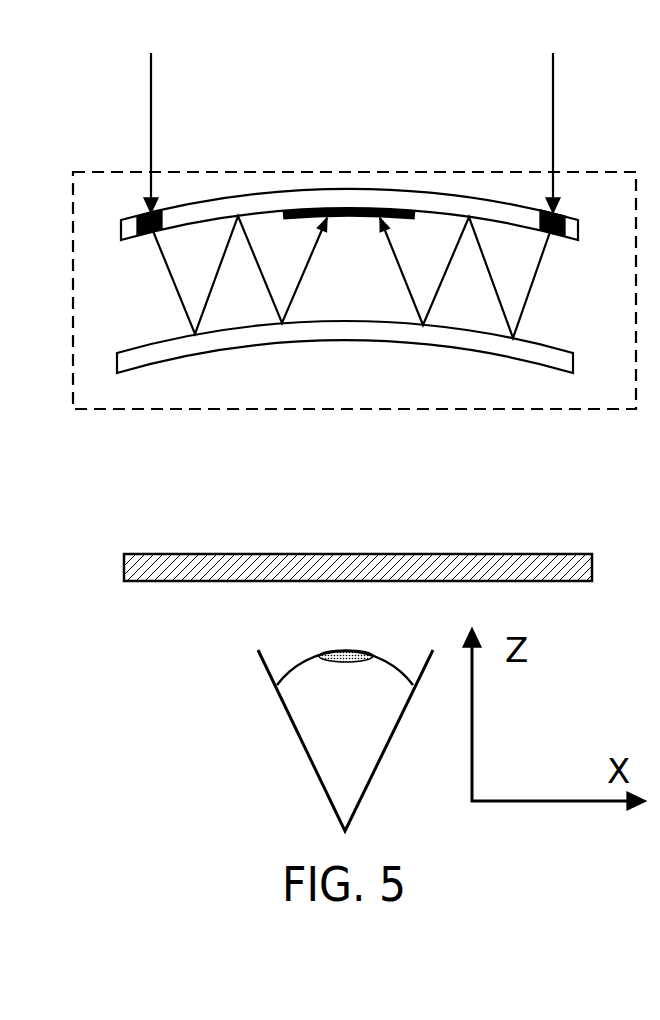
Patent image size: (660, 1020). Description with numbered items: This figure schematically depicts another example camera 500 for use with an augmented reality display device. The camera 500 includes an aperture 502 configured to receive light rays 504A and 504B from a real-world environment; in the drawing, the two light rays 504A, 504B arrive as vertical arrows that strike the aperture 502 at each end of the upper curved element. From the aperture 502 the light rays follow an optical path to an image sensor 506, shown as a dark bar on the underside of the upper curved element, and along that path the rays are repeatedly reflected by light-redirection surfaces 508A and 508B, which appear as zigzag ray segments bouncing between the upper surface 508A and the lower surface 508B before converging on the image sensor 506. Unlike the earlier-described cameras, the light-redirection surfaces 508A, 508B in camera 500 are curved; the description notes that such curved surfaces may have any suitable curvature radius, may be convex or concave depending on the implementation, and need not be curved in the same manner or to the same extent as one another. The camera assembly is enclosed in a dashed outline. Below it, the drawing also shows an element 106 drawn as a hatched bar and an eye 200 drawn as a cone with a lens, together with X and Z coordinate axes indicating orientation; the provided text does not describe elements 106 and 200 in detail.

The camera 500 is at (97, 171).
The aperture 502 is at (145, 213).
The light ray 504A is at (151, 120).
The light ray 504B is at (553, 112).
The image sensor 506 is at (342, 208).
The light-redirection surface 508A is at (260, 193).
The light-redirection surface 508B is at (235, 348).
The lens 106 is at (553, 555).
The eye 200 is at (308, 758).